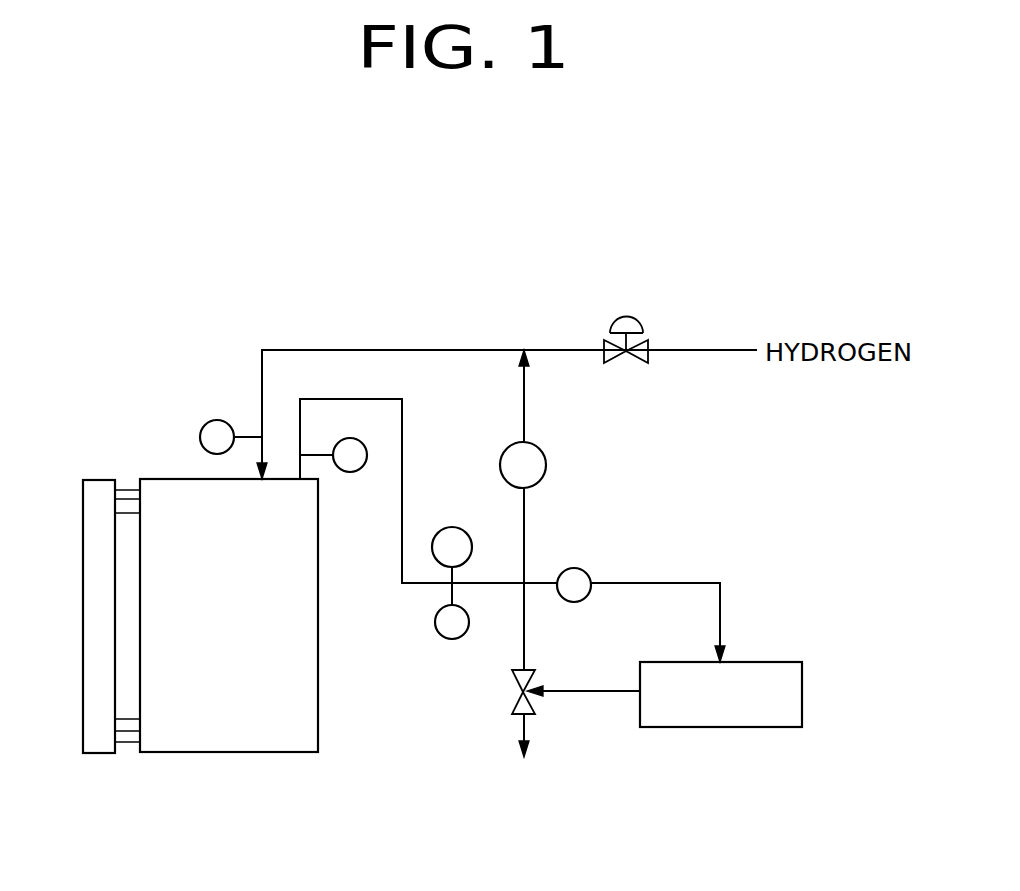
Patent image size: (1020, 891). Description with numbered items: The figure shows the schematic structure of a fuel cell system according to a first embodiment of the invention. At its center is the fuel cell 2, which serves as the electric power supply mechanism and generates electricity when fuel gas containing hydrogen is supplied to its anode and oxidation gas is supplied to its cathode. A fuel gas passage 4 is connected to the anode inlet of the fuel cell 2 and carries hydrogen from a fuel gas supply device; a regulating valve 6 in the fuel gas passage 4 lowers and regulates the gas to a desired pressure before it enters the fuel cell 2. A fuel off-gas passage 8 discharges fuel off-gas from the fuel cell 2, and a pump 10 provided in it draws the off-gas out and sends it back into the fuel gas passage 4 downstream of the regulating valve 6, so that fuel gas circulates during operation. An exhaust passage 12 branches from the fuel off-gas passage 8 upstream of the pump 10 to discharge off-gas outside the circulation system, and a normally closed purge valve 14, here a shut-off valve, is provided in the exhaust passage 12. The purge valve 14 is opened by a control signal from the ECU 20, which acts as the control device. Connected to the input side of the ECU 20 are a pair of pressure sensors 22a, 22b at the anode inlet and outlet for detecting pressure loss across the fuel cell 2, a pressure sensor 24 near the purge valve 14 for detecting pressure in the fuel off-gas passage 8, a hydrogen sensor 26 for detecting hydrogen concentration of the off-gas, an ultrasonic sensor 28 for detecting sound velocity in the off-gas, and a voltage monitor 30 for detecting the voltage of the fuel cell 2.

The fuel cell 2 is at (178, 478).
The fuel gas passage 4 is at (403, 350).
The regulating valve 6 is at (622, 316).
The fuel off-gas passage 8 is at (402, 422).
The pump 10 is at (538, 448).
The exhaust passage 12 is at (524, 641).
The purge valve 14 is at (520, 690).
The ECU 20 is at (760, 662).
The pressure sensor 22a is at (213, 420).
The pressure sensor 22b is at (350, 472).
The pressure sensor 24 is at (566, 568).
The hydrogen sensor 26 is at (452, 527).
The ultrasonic sensor 28 is at (435, 622).
The voltage monitor 30 is at (100, 479).